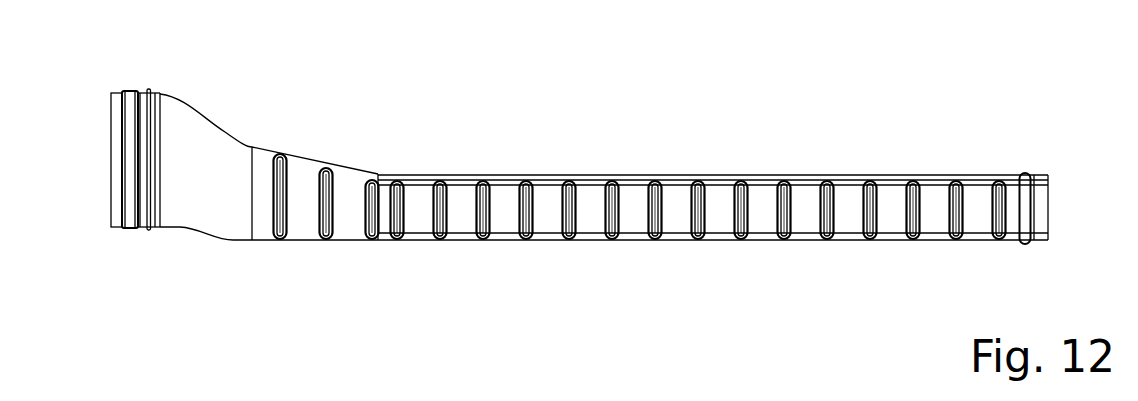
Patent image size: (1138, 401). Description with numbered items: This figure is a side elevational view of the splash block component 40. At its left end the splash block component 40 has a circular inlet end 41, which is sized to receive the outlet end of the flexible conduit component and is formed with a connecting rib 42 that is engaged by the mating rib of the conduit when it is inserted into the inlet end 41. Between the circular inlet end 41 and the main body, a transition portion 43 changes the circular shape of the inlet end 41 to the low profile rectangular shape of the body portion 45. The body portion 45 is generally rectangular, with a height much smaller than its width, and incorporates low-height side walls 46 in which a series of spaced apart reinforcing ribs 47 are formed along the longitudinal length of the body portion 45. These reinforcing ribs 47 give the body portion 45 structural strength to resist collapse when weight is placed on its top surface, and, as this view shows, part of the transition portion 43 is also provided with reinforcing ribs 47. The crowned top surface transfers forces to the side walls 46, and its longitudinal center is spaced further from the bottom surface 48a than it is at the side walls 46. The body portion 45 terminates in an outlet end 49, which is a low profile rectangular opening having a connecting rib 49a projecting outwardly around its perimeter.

The splash block component 40 is at (943, 98).
The inlet end 41 is at (113, 229).
The connecting rib 42 is at (133, 91).
The transition portion 43 is at (210, 143).
The body portion 45 is at (588, 210).
The side walls 46 is at (720, 193).
The reinforcing ribs 47 is at (518, 203).
The bottom surface 48a is at (720, 242).
The outlet end 49 is at (1047, 212).
The connecting rib 49a is at (1025, 173).